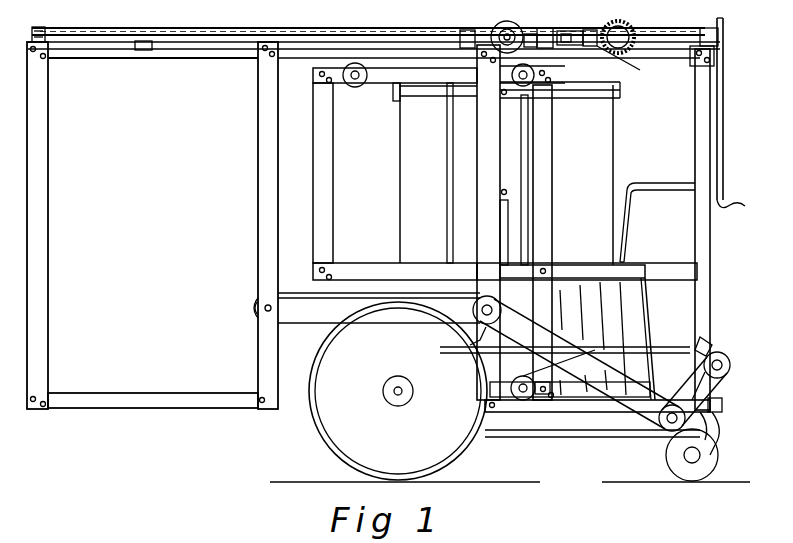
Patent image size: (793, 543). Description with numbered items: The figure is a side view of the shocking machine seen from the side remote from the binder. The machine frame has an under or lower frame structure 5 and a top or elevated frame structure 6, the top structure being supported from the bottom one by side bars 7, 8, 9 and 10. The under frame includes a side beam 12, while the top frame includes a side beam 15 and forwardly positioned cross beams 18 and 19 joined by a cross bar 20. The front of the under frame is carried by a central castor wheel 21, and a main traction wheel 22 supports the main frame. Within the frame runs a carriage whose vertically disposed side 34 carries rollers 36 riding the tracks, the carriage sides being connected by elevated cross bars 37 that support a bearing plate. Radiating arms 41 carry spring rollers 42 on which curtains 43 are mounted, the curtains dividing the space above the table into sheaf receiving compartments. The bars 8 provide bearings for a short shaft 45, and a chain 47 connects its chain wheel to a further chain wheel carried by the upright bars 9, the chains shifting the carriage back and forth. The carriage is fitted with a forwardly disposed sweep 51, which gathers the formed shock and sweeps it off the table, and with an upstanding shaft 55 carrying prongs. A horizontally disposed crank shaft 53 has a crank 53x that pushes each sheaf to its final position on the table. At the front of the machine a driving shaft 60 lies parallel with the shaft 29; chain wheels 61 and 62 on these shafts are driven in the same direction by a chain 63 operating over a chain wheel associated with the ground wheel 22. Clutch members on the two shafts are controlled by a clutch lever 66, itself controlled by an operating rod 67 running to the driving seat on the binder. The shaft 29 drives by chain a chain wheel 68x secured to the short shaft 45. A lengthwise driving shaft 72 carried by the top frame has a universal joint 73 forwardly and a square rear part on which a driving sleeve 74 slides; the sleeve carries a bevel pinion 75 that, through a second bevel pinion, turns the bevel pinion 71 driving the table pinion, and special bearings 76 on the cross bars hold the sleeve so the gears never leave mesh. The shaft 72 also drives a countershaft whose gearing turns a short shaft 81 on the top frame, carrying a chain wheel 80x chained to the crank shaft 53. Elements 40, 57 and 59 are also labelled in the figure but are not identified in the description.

The under frame structure 5 is at (155, 406).
The top frame structure 6 is at (195, 58).
The side bar 7 is at (700, 130).
The side bar 8 is at (490, 135).
The side bar 9 is at (262, 152).
The side bar 10 is at (40, 170).
The side beam 12 is at (547, 415).
The side beam 15 is at (310, 58).
The cross beam 18 is at (621, 67).
The cross beam 19 is at (700, 52).
The cross bar 20 is at (742, 207).
The castor wheel 21 is at (703, 470).
The main traction wheel 22 is at (345, 430).
The shaft 29 is at (708, 445).
The carriage side 34 is at (328, 198).
The roller 36 is at (357, 87).
The cross bar 37 is at (470, 68).
The upright column 40 is at (505, 170).
The radiating arm 41 is at (395, 97).
The spring roller 42 is at (412, 97).
The curtain 43 is at (400, 195).
The short shaft 45 is at (480, 325).
The chain 47 is at (425, 292).
The sweep 51 is at (640, 310).
The crank shaft 53 is at (676, 192).
The crank 53x is at (622, 262).
The shaft 55 is at (447, 212).
The top rail 57 is at (432, 38).
The top rail 59 is at (328, 45).
The driving shaft 60 is at (728, 362).
The chain wheel 61 is at (729, 378).
The chain wheel 62 is at (668, 431).
The chain 63 is at (598, 438).
The clutch lever 66 is at (700, 374).
The operating rod 67 is at (710, 340).
The chain wheel 68x is at (497, 298).
The bevel pinion 71 is at (497, 24).
The driving shaft 72 is at (225, 22).
The universal joint 73 is at (572, 31).
The driving sleeve 74 is at (466, 30).
The bevel pinion 75 is at (522, 30).
The special bearing 76 is at (455, 50).
The chain wheel 80x is at (725, 42).
The short shaft 81 is at (710, 28).